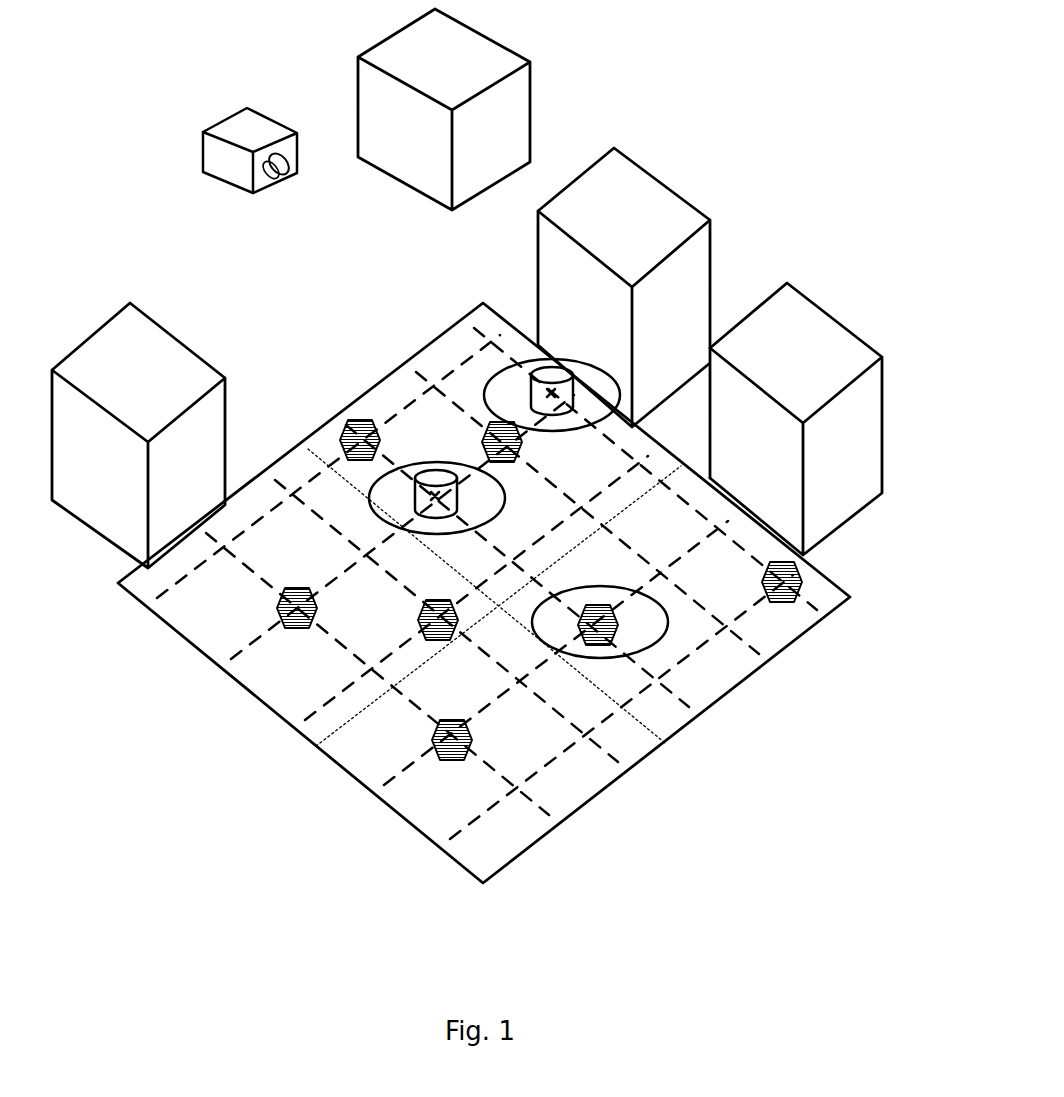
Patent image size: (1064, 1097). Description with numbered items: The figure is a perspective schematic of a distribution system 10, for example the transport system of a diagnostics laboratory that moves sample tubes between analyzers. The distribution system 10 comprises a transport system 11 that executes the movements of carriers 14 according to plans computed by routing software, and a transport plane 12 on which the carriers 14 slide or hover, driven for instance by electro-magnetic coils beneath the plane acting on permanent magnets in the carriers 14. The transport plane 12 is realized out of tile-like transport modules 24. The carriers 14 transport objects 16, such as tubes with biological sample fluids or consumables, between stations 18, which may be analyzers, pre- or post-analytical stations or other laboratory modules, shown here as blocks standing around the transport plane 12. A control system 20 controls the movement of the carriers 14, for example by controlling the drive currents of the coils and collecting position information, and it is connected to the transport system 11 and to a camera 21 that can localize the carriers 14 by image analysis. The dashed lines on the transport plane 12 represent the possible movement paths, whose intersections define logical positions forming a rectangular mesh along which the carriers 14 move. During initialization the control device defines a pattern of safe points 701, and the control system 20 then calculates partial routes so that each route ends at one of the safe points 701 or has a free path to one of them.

The distribution system 10 is at (819, 178).
The transport system 11 is at (200, 745).
The transport plane 12 is at (823, 587).
The carrier 14 is at (625, 632).
The object 16 is at (617, 417).
The station 18 is at (815, 333).
The control system 20 is at (487, 55).
The camera 21 is at (233, 123).
The transport module 24 is at (414, 783).
The safe point 701 is at (598, 645).